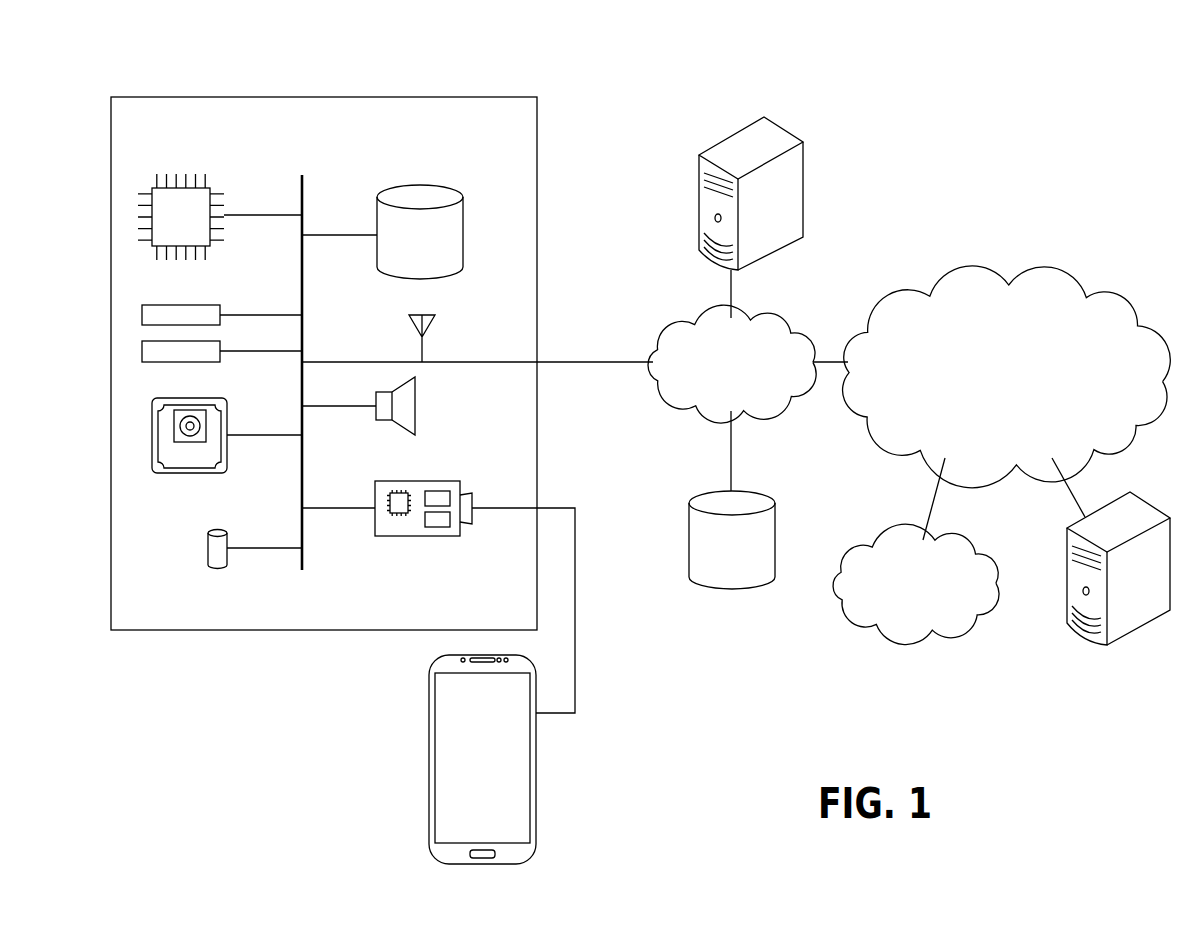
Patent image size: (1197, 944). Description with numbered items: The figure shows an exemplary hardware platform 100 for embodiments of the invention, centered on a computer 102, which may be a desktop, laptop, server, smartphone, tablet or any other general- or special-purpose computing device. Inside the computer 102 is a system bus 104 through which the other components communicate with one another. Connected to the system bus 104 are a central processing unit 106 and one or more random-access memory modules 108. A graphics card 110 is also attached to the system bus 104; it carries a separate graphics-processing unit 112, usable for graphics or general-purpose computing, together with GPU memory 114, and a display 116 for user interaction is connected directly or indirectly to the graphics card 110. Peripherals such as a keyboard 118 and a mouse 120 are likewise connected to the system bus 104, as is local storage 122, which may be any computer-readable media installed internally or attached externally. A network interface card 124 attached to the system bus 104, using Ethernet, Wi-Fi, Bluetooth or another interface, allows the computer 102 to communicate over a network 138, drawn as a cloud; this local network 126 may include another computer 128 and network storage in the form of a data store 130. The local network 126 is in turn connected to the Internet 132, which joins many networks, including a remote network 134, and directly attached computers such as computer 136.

The system 100 is at (1063, 92).
The computer 102 is at (494, 97).
The system bus 104 is at (304, 186).
The central processing unit 106 is at (205, 188).
The random-access memory modules 108 is at (233, 340).
The graphics card 110 is at (375, 492).
The graphics-processing unit 112 is at (399, 507).
The GPU memory 114 is at (437, 522).
The display 116 is at (536, 766).
The keyboard 118 is at (228, 425).
The mouse 120 is at (206, 556).
The local storage 122 is at (464, 216).
The network interface card 124 is at (410, 332).
The local network 126 is at (418, 420).
The computer 128 is at (784, 130).
The data store 130 is at (766, 497).
The Internet 132 is at (1052, 283).
The remote network 134 is at (975, 541).
The computer 136 is at (1150, 498).
The network 138 is at (787, 323).